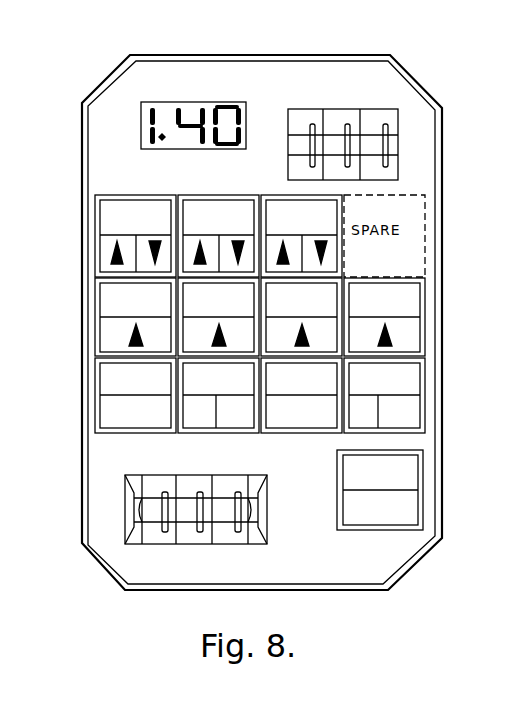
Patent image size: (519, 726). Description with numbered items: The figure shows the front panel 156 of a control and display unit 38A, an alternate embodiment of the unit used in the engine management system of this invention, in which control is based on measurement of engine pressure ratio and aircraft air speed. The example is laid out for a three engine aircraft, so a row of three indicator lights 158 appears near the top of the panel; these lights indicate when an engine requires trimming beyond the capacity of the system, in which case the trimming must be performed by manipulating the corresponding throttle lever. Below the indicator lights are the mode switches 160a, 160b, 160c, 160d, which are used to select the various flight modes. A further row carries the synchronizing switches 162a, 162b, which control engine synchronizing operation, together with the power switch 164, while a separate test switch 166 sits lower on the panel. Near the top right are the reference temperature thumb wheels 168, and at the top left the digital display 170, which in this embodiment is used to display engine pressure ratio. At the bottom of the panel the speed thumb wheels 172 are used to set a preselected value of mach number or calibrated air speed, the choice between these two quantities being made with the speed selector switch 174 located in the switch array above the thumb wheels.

The control and display unit 38A is at (452, 107).
The front panel 156 is at (98, 108).
The indicator lights 158 is at (280, 205).
The mode switch 160a is at (112, 305).
The mode switch 160b is at (190, 313).
The mode switch 160c is at (327, 289).
The mode switch 160d is at (413, 302).
The synchronizing switch 162a is at (275, 390).
The synchronizing switch 162b is at (185, 380).
The power switch 164 is at (413, 373).
The test switch 166 is at (413, 465).
The reference temperature thumb wheels 168 is at (353, 110).
The digital display 170 is at (150, 103).
The speed thumb wheels 172 is at (155, 538).
The speed selector switch 174 is at (102, 420).